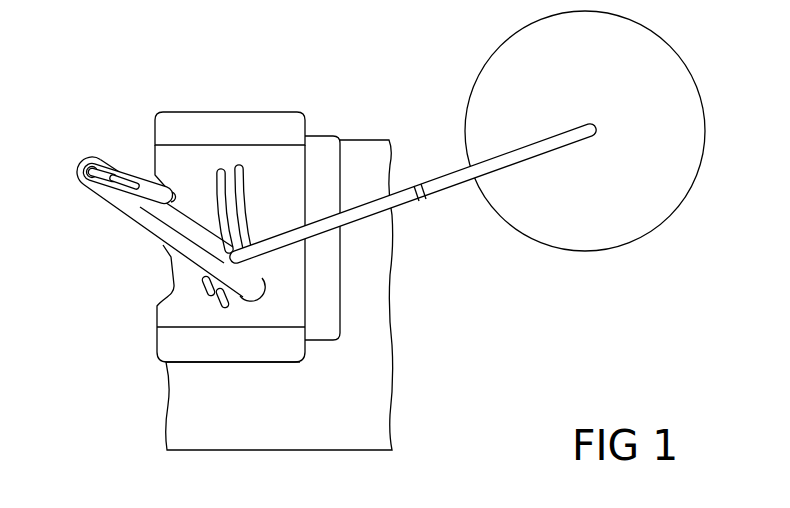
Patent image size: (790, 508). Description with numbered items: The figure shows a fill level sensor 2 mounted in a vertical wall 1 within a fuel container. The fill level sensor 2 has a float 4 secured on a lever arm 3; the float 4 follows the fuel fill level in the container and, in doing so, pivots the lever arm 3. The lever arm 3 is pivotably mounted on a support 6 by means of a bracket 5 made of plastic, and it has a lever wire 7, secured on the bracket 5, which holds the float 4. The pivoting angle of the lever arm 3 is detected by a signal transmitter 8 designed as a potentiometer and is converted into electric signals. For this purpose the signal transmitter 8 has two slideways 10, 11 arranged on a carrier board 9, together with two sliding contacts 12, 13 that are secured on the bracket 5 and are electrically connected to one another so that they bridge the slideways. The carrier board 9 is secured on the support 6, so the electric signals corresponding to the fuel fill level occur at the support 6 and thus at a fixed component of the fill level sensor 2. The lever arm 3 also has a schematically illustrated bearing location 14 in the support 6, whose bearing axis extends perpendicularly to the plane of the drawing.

The vertical wall 1 is at (380, 148).
The fill level sensor 2 is at (338, 129).
The lever arm 3 is at (132, 250).
The float 4 is at (684, 121).
The bracket 5 is at (120, 154).
The support 6 is at (202, 130).
The lever wire 7 is at (437, 192).
The signal transmitter 8 is at (200, 310).
The carrier board 9 is at (177, 165).
The slideway 10 is at (218, 168).
The slideway 11 is at (239, 165).
The sliding contact 12 is at (202, 280).
The sliding contact 13 is at (216, 292).
The bearing location 14 is at (86, 157).